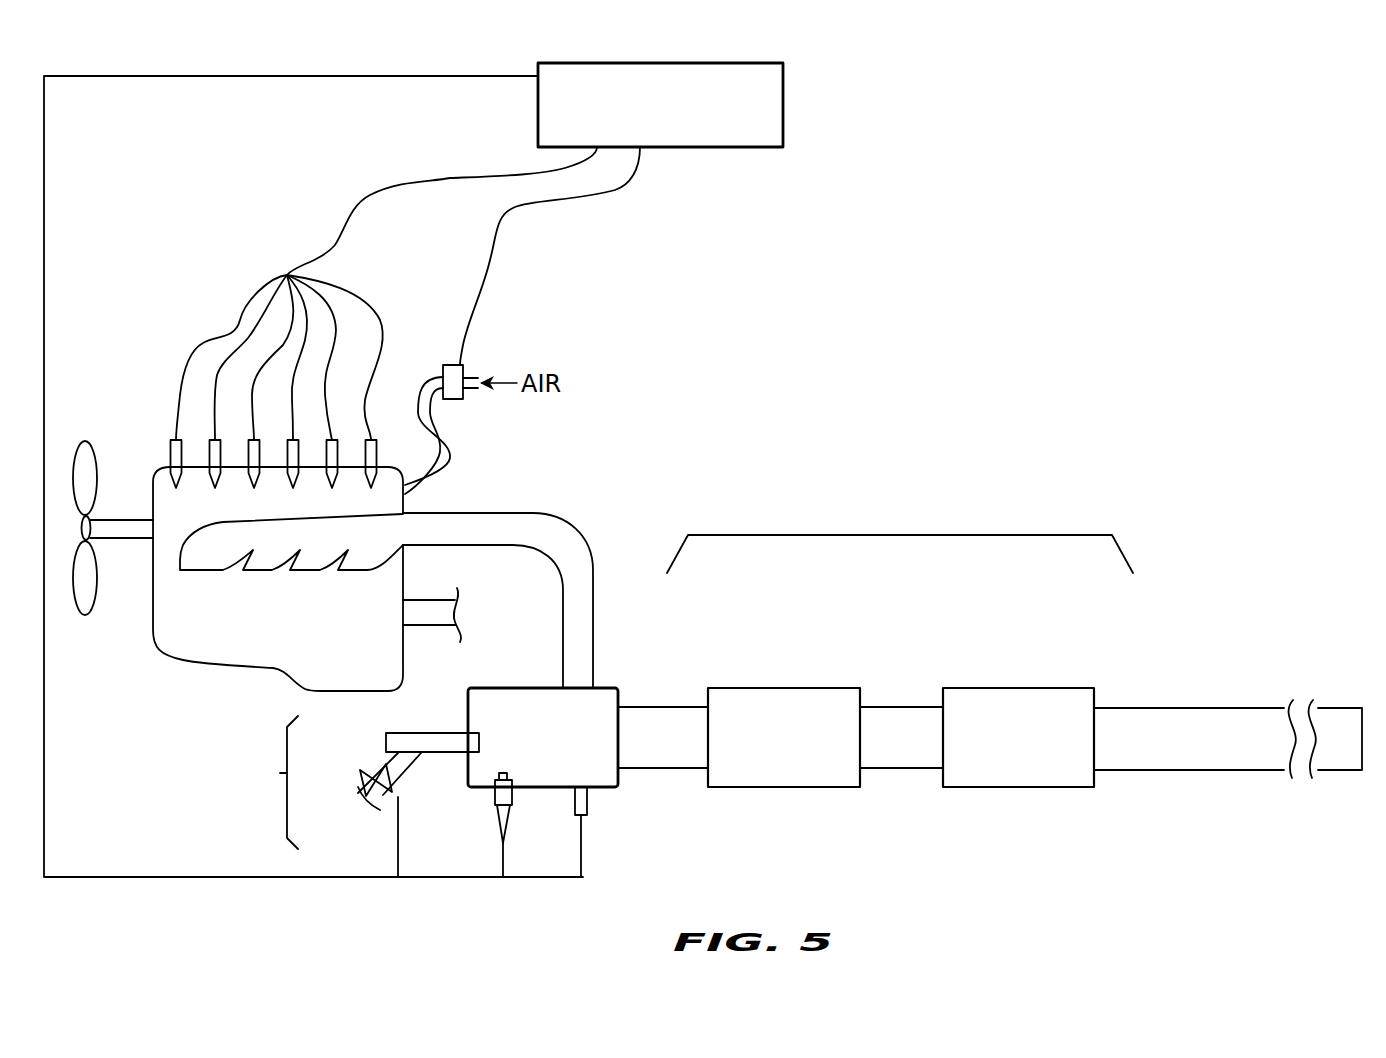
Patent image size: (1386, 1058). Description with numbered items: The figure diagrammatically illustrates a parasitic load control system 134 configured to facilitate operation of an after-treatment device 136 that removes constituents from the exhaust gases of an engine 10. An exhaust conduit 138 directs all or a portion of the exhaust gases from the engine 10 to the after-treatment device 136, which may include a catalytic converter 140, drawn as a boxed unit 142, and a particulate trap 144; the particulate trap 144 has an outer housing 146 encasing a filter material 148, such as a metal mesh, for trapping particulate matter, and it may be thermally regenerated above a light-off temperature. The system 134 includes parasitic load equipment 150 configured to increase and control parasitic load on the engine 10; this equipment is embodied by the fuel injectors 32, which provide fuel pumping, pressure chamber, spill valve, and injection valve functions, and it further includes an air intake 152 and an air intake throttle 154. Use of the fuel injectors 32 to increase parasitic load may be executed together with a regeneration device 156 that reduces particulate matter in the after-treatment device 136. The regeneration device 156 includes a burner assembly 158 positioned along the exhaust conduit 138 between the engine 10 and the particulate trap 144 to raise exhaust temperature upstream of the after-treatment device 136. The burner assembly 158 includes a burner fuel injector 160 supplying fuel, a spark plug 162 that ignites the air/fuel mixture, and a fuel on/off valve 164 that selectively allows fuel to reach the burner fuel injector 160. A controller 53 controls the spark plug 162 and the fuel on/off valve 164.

The engine 10 is at (194, 700).
The fuel injectors 32 is at (174, 456).
The controller 53 is at (783, 98).
The system 134 is at (945, 323).
The after-treatment device 136 is at (905, 534).
The exhaust conduit 138 is at (520, 512).
The catalytic converter 140 is at (775, 652).
The oxidation catalyst 142 is at (762, 752).
The particulate trap 144 is at (1041, 647).
The outer housing 146 is at (1075, 688).
The filter material 148 is at (997, 752).
The parasitic load equipment 150 is at (600, 238).
The air intake 152 is at (486, 364).
The air intake throttle 154 is at (457, 394).
The regeneration device 156 is at (285, 773).
The burner assembly 158 is at (509, 676).
The burner fuel injector 160 is at (428, 733).
The spark plug 162 is at (494, 800).
The fuel on/off valve 164 is at (372, 762).